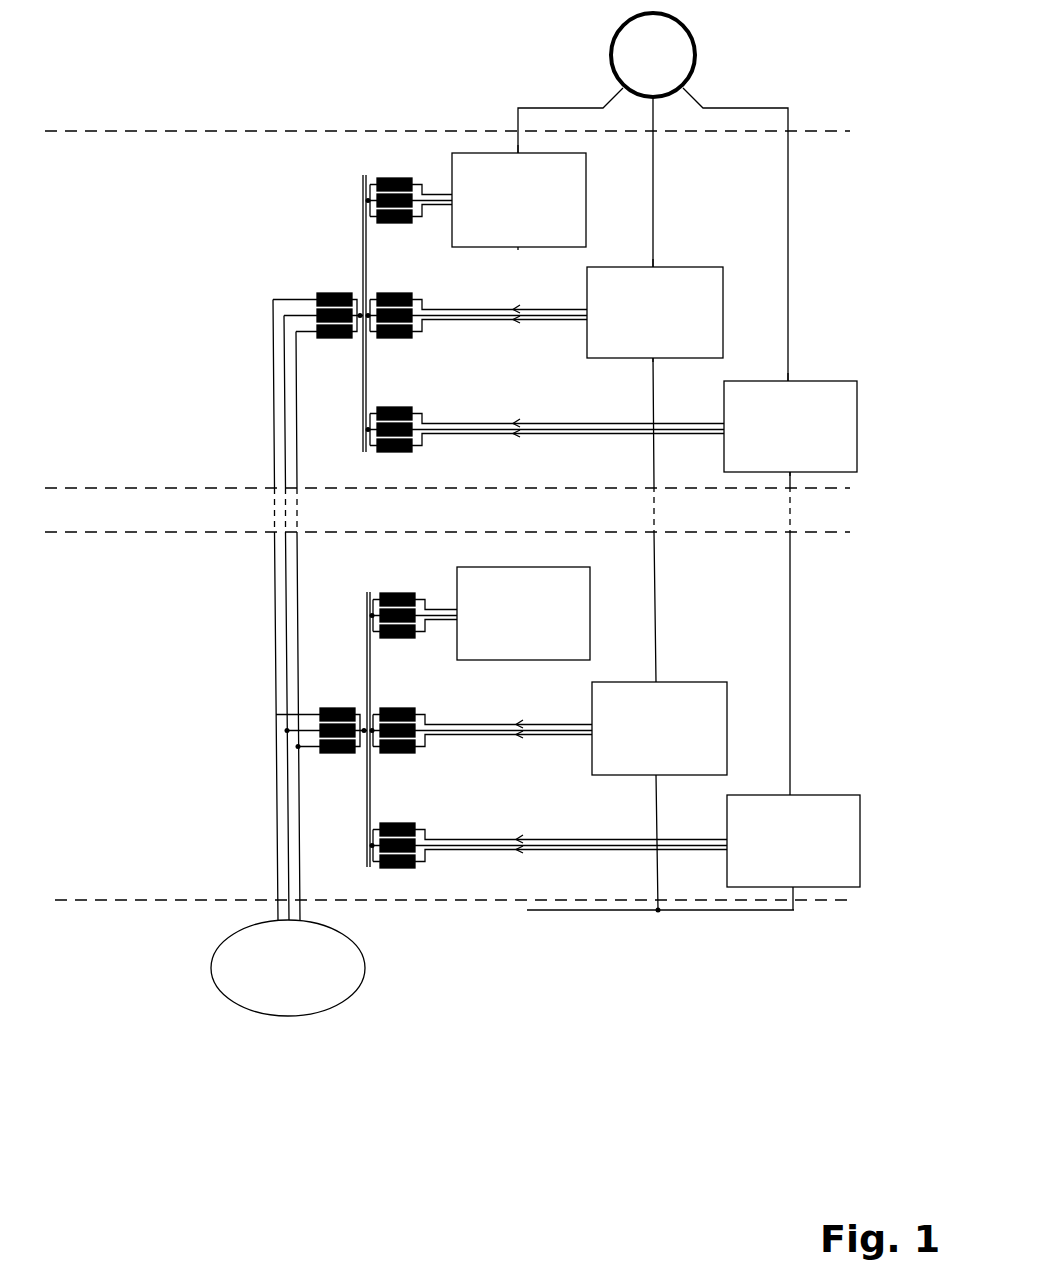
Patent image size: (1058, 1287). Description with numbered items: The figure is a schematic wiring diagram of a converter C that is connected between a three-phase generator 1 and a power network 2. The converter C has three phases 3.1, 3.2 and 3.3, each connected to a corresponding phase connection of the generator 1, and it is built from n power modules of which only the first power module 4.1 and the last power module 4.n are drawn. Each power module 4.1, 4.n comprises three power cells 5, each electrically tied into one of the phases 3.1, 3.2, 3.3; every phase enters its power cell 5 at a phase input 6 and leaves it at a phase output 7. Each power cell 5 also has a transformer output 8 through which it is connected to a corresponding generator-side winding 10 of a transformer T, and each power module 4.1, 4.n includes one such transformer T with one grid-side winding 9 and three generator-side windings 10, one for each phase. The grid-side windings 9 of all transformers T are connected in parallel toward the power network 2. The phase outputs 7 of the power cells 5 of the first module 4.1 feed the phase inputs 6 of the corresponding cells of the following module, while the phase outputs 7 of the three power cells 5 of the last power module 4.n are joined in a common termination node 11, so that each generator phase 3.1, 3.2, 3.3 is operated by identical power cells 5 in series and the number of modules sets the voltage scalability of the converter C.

The three-phase generator 1 is at (612, 50).
The power network 2 is at (310, 1017).
The first phase 3.1 is at (518, 113).
The second phase 3.2 is at (655, 173).
The third phase 3.3 is at (755, 108).
The first power module 4.1 is at (194, 263).
The last power module 4.n is at (125, 812).
The power cell 5 is at (589, 206).
The phase input 6 is at (520, 150).
The phase output 7 is at (522, 247).
The transformer output 8 is at (447, 194).
The grid-side winding 9 is at (328, 293).
The generator-side winding 10 is at (388, 227).
The common termination node 11 is at (658, 912).
The transformer T is at (320, 217).
The converter C is at (745, 975).